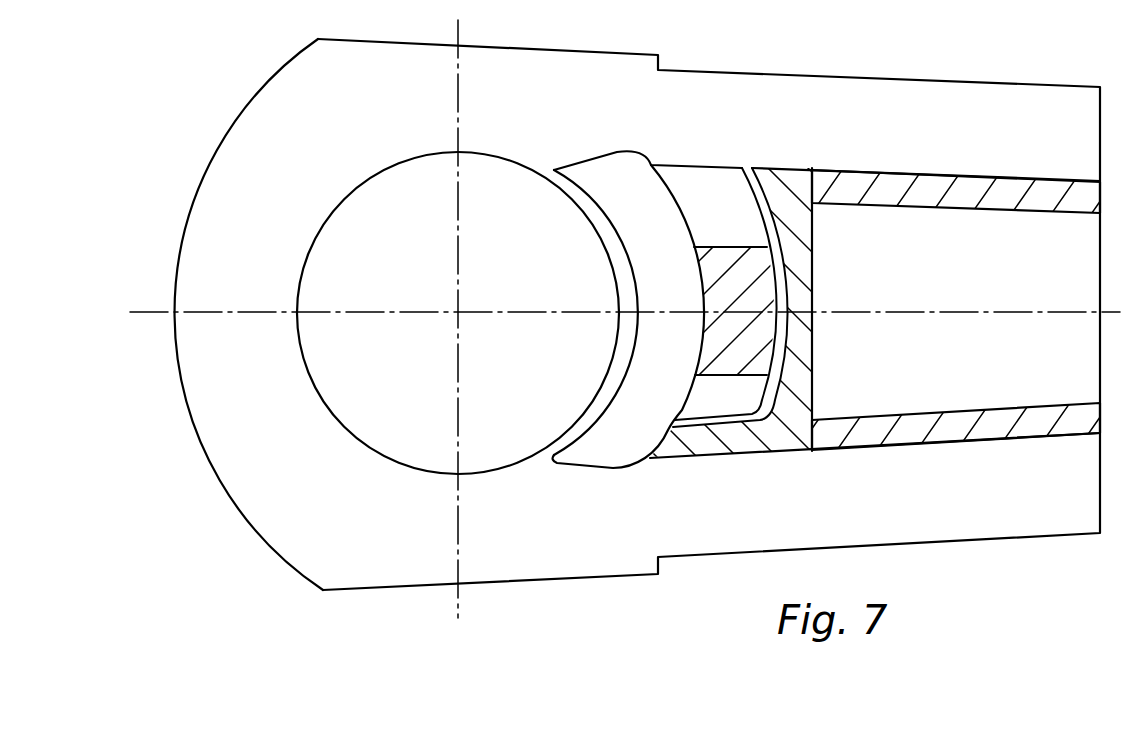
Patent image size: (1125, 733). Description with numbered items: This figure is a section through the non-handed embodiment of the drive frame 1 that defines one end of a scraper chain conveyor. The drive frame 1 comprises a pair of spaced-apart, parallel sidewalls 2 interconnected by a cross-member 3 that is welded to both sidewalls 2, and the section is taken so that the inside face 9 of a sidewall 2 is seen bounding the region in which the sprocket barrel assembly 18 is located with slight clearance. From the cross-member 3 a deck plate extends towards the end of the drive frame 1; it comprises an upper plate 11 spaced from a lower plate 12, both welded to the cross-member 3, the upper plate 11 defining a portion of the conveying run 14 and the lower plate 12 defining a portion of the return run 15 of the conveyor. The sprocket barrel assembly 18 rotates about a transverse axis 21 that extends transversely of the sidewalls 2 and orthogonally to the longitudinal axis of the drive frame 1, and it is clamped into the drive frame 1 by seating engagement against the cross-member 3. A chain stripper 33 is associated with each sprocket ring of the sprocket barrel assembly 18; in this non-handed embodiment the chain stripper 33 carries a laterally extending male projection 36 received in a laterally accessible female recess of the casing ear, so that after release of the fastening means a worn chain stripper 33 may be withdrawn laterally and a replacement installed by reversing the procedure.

The drive frame 1 is at (273, 62).
The sidewall 2 is at (913, 99).
The cross-member 3 is at (815, 290).
The inside face 9 is at (358, 123).
The upper plate 11 is at (933, 185).
The lower plate 12 is at (910, 422).
The conveying run 14 is at (788, 132).
The return run 15 is at (874, 522).
The sprocket barrel assembly 18 is at (303, 250).
The axis 21 is at (458, 313).
The chain stripper 33 is at (650, 157).
The male projection 36 is at (760, 267).